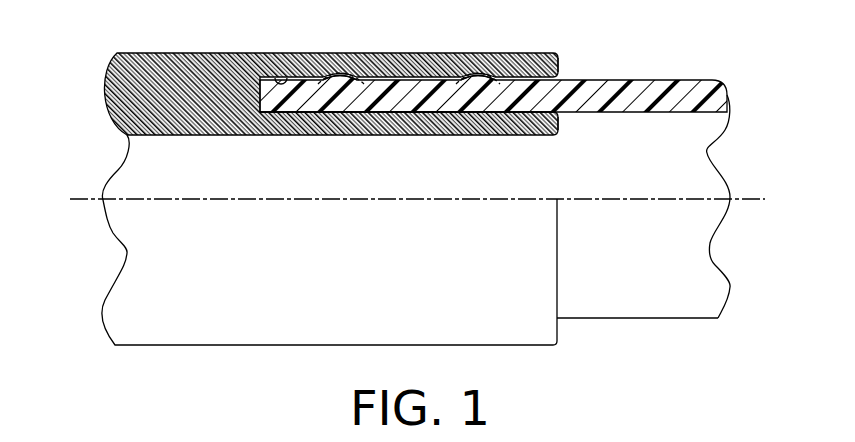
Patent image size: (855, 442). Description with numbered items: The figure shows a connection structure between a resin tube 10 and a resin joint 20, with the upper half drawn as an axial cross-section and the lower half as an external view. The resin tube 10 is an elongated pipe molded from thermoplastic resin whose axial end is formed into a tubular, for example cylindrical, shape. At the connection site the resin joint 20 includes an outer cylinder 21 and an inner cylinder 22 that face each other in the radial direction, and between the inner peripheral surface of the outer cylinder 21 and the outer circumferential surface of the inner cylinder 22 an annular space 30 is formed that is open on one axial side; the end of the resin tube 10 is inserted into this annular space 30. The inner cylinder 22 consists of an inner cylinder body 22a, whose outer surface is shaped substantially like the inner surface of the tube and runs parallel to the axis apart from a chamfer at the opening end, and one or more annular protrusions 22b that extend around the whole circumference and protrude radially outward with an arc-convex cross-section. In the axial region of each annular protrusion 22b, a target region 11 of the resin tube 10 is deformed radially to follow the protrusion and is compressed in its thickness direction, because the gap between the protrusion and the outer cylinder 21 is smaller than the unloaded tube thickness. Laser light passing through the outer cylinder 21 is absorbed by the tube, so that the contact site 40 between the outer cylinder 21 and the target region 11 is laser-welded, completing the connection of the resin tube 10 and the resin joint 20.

The resin tube 10 is at (690, 80).
The target region 11 is at (344, 76).
The resin joint 20 is at (175, 53).
The outer cylinder 21 is at (540, 54).
The inner cylinder 22 is at (542, 133).
The inner cylinder body 22a is at (433, 113).
The annular protrusion 22b is at (357, 113).
The annular space 30 is at (279, 78).
The contact site 40 is at (366, 56).